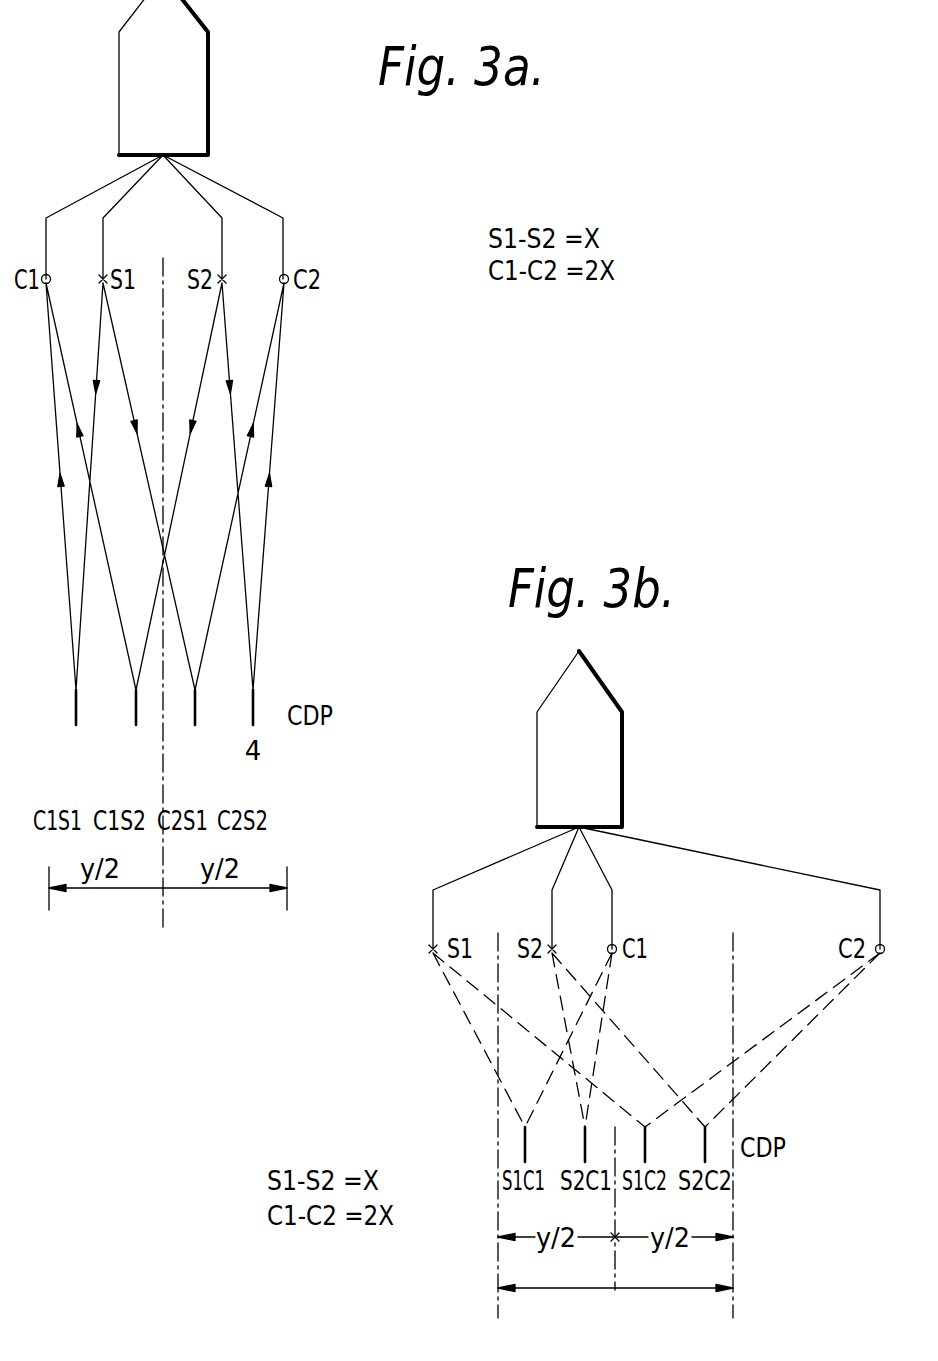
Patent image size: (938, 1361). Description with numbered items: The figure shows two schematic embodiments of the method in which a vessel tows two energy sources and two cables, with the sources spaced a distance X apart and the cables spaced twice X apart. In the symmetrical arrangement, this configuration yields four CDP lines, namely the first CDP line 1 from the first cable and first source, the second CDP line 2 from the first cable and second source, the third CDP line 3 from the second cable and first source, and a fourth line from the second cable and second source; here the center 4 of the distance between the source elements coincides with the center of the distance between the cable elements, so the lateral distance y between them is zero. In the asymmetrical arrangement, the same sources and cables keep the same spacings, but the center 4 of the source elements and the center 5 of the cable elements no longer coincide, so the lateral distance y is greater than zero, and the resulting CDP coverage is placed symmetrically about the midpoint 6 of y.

In FIG. 3A, the CDP line C1S1 1 is at (76, 728).
In FIG. 3A, the CDP line C1S2 2 is at (136, 728).
In FIG. 3A, the CDP line C2S1 3 is at (195, 728).
In FIG. 3A, the center of the distance between the source elements 4 is at (163, 262).
In FIG. 3B, the center of the distance between the source elements 4 is at (498, 935).
In FIG. 3B, the center of the cable elements 5 is at (733, 935).
In FIG. 3B, the midpoint of y 6 is at (620, 1291).